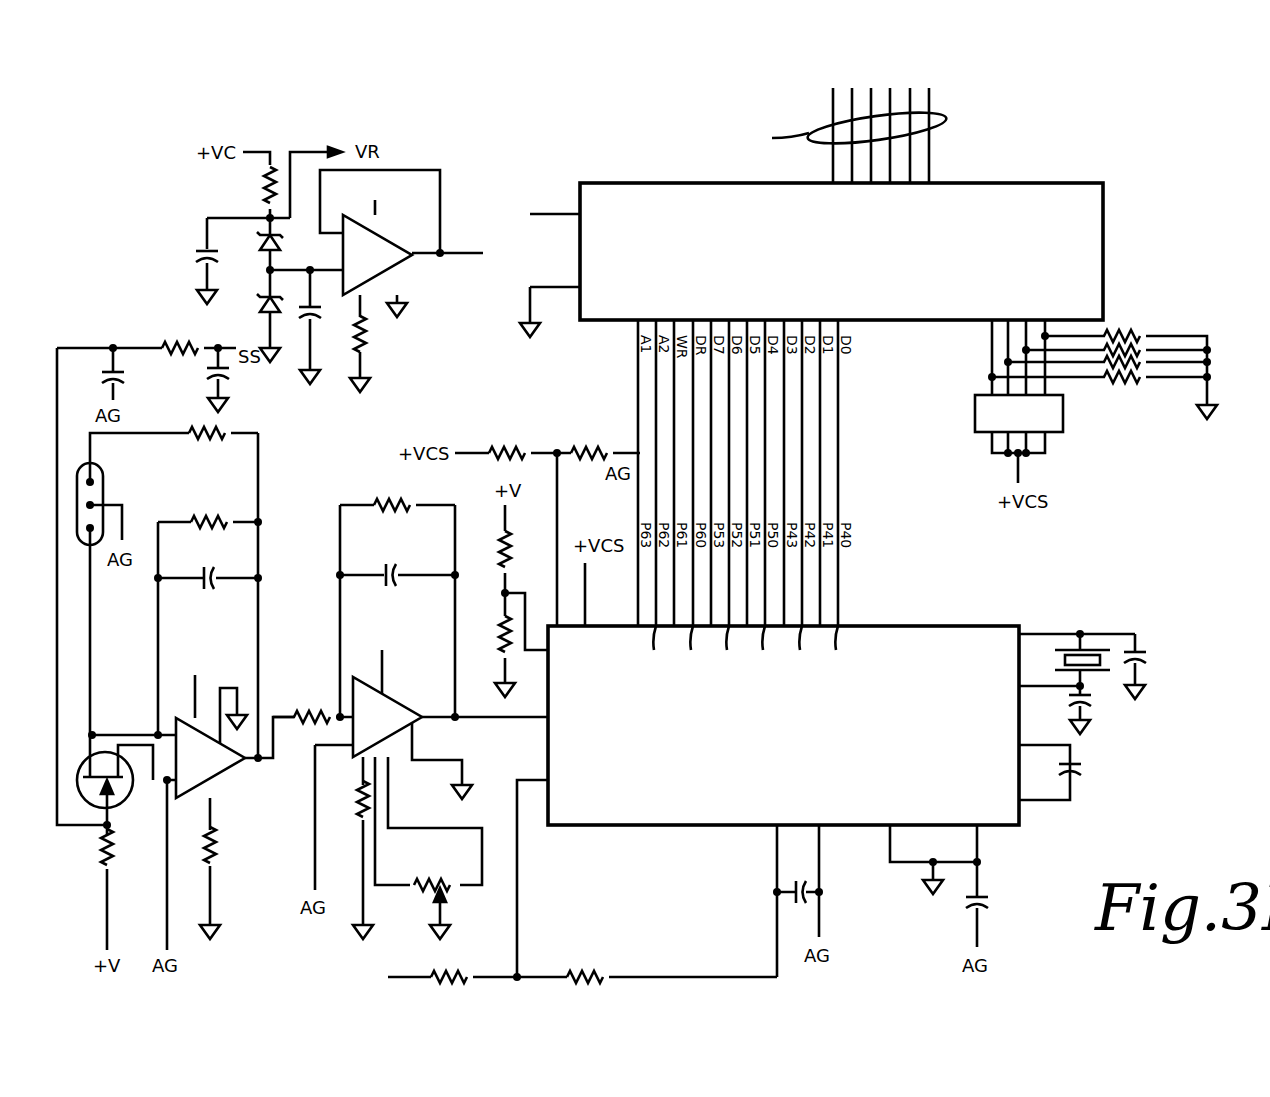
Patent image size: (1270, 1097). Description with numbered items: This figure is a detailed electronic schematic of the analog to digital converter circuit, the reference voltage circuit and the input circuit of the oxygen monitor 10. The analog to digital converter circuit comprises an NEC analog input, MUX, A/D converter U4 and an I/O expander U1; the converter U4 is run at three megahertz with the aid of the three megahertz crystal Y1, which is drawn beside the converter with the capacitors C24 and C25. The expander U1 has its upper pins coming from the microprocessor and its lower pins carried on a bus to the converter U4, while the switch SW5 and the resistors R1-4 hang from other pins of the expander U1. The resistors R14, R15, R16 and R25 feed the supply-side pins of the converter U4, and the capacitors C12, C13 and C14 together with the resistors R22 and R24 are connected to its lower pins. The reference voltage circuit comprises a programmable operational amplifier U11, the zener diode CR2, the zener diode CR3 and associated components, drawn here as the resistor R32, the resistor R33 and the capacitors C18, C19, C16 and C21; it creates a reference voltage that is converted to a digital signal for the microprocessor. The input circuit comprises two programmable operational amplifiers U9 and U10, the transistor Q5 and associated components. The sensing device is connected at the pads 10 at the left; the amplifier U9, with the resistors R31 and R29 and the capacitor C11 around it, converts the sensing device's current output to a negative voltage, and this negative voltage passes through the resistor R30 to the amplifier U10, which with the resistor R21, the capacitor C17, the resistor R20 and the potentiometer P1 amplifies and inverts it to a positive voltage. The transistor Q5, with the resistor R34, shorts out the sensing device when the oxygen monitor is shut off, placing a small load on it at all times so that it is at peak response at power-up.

The oxygen monitor 10 is at (105, 478).
The I/O expander U1 is at (793, 212).
The analog input, MUX, A/D converter U4 is at (783, 801).
The programmable operational amplifier U9 is at (229, 800).
The programmable operational amplifier U10 is at (431, 782).
The programmable operational amplifier U11 is at (401, 281).
The transistor Q5 is at (115, 785).
The switch SW5 is at (1019, 439).
The resistors R1-4 is at (1102, 363).
The resistor R14 is at (524, 549).
The resistor R15 is at (490, 645).
The resistor R16 is at (506, 441).
The resistor R20 is at (337, 801).
The resistor R21 is at (397, 494).
The resistor R22 is at (647, 965).
The resistor R24 is at (452, 965).
The resistor R25 is at (598, 441).
The resistor R29 is at (208, 512).
The resistor R30 is at (313, 704).
The resistor R31 is at (174, 454).
The resistor R32 is at (242, 185).
The resistor R33 is at (146, 339).
The resistor R34 is at (127, 887).
The potentiometer P1 is at (432, 897).
The capacitor C11 is at (208, 569).
The capacitor C12 is at (1003, 920).
The capacitor C13 is at (1091, 770).
The capacitor C14 is at (798, 878).
The capacitor C16 is at (132, 374).
The capacitor C17 is at (397, 566).
The capacitor C18 is at (184, 261).
The capacitor C19 is at (324, 312).
The capacitor C21 is at (237, 380).
The capacitor C24 is at (1056, 710).
The capacitor C25 is at (1157, 666).
The zener diode CR2 is at (248, 316).
The zener diode CR3 is at (247, 244).
The crystal Y1 is at (1069, 660).